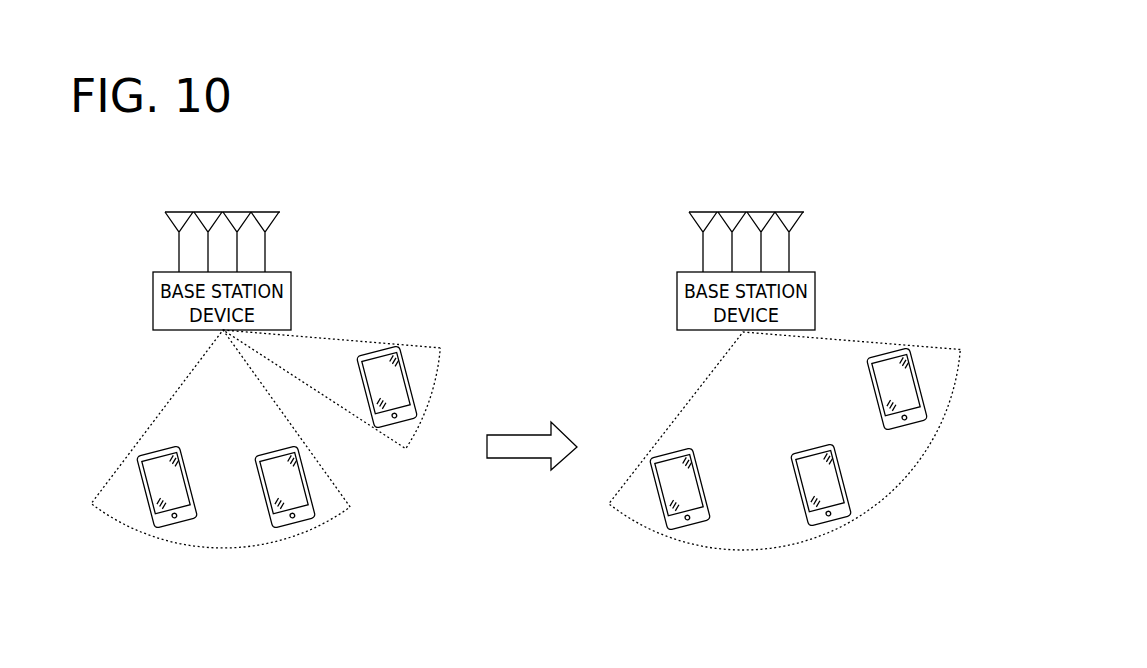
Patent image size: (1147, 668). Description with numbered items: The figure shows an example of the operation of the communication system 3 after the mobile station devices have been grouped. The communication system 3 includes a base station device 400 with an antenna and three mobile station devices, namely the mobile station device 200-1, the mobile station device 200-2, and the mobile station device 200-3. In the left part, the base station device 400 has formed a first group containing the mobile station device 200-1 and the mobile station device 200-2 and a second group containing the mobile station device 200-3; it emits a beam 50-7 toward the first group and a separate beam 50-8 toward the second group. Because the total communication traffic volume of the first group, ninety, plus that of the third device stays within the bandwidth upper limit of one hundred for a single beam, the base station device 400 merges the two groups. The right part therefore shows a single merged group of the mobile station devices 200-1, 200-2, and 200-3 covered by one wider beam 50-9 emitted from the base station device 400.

The communication system 3 is at (542, 184).
The base station device 400 is at (291, 305).
The mobile station device 200-1 is at (175, 527).
The mobile station device 200-2 is at (296, 527).
The mobile station device 200-3 is at (379, 349).
The beam 50-7 is at (163, 407).
The beam 50-8 is at (430, 347).
The beam 50-9 is at (687, 403).